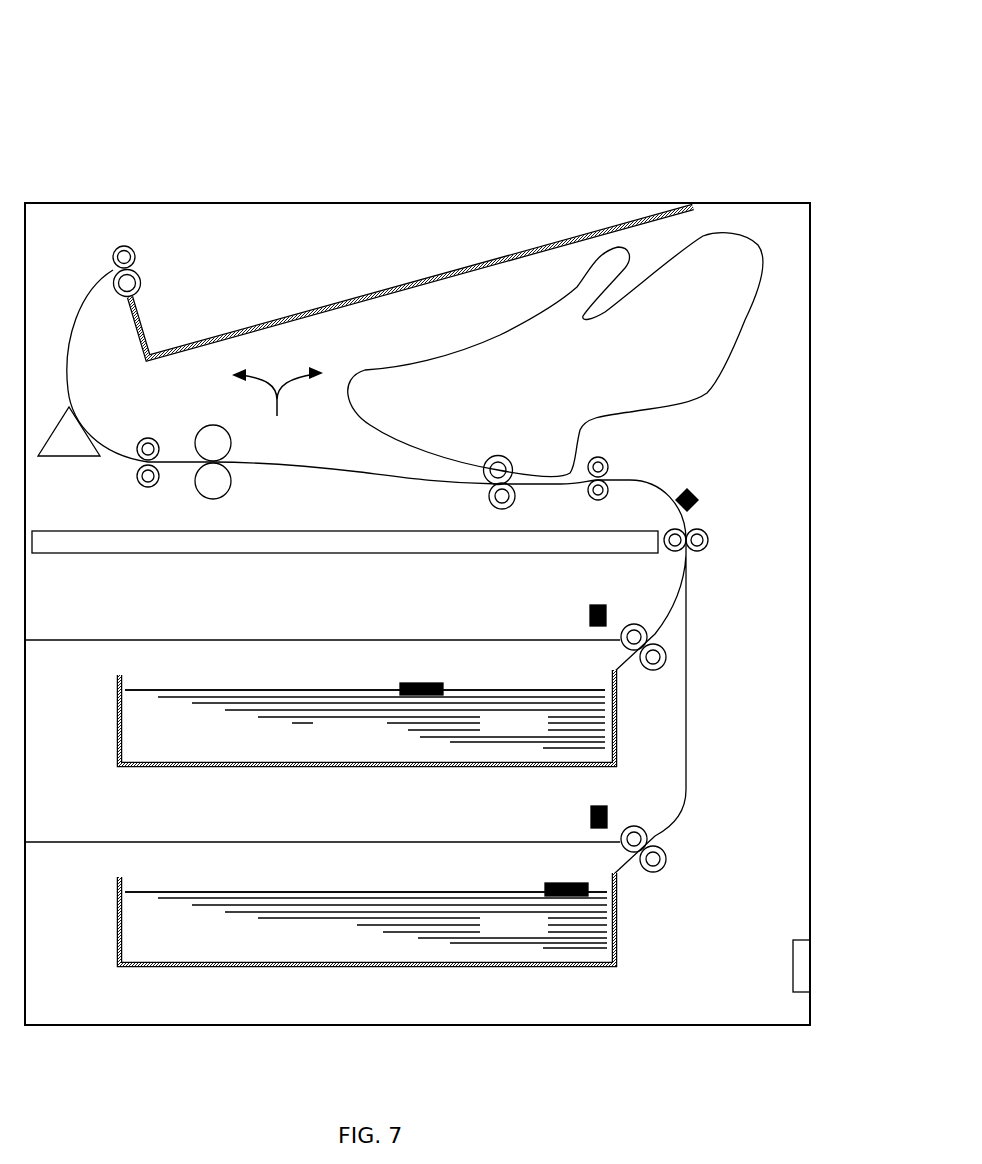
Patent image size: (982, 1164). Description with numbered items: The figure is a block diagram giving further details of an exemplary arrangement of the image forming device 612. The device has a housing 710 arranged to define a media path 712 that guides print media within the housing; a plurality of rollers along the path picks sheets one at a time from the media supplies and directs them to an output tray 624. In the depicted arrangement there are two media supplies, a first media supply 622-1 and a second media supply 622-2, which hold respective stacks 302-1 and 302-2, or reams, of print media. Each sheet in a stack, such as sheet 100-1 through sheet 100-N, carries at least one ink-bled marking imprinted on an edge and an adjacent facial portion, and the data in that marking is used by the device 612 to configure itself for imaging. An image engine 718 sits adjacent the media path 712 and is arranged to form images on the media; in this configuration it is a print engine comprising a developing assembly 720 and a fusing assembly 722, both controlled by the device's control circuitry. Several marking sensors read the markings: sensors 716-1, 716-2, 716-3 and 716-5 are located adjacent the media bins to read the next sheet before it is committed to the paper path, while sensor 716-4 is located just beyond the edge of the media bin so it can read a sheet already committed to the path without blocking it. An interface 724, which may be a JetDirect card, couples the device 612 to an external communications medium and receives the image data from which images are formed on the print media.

The image forming device 612 is at (110, 50).
The housing 710 is at (630, 203).
The output tray 624 is at (438, 275).
The developing assembly 720 is at (707, 393).
The image engine 718 is at (277, 407).
The fusing assembly 722 is at (202, 430).
The media path 712 is at (300, 466).
The marking sensor 716-4 is at (697, 490).
The marking sensor 716-3 is at (591, 613).
The marking sensor 716-5 is at (591, 815).
The marking sensor 716-1 is at (416, 696).
The marking sensor 716-2 is at (563, 884).
The first media supply 622-1 is at (140, 768).
The second media supply 622-2 is at (140, 970).
The stack 302-1 is at (365, 719).
The stack 302-2 is at (366, 920).
The print media sheet 100-1 is at (377, 690).
The print media sheet 100-N is at (377, 890).
The interface 724 is at (793, 972).